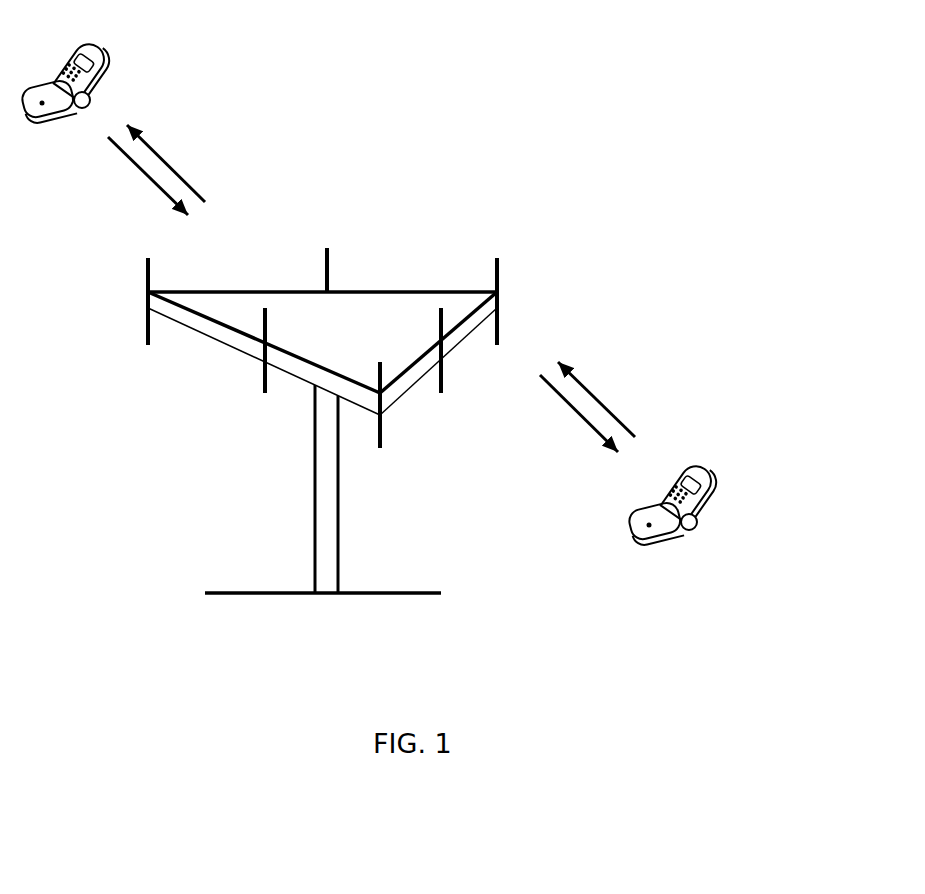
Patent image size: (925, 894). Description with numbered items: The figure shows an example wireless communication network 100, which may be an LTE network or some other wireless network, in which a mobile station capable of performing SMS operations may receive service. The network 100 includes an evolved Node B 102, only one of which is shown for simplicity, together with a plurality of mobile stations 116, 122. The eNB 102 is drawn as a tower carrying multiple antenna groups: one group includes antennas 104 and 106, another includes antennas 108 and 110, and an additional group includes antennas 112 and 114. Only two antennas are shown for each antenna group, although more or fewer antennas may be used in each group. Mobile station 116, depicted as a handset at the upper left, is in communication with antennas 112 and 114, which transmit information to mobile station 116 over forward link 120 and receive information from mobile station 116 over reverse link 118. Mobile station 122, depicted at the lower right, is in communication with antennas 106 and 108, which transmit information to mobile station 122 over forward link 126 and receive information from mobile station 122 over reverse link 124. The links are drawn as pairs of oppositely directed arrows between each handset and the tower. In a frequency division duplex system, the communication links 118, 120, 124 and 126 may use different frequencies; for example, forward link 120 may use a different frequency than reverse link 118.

The wireless communication network 100 is at (604, 39).
The evolved Node B 102 is at (325, 595).
The antenna 104 is at (499, 262).
The antenna 106 is at (441, 392).
The antenna 108 is at (381, 447).
The antenna 110 is at (265, 392).
The antenna 112 is at (150, 262).
The antenna 114 is at (329, 253).
The mobile station 116 is at (95, 44).
The reverse link 118 is at (165, 160).
The forward link 120 is at (143, 178).
The mobile station 122 is at (716, 470).
The reverse link 124 is at (580, 416).
The forward link 126 is at (598, 398).